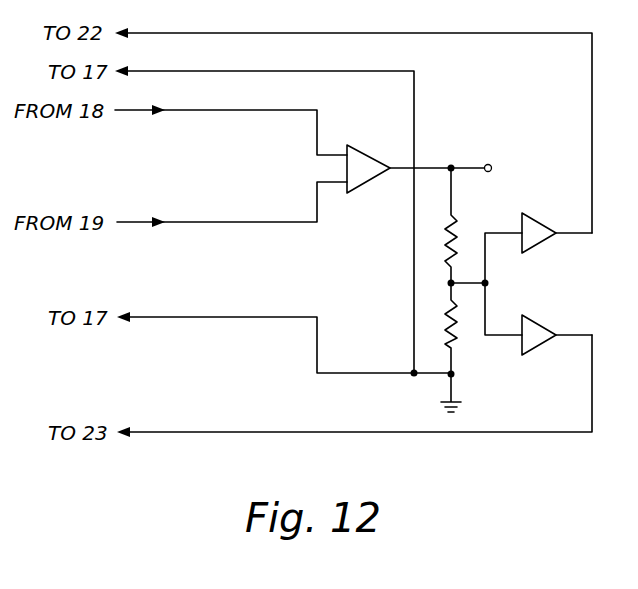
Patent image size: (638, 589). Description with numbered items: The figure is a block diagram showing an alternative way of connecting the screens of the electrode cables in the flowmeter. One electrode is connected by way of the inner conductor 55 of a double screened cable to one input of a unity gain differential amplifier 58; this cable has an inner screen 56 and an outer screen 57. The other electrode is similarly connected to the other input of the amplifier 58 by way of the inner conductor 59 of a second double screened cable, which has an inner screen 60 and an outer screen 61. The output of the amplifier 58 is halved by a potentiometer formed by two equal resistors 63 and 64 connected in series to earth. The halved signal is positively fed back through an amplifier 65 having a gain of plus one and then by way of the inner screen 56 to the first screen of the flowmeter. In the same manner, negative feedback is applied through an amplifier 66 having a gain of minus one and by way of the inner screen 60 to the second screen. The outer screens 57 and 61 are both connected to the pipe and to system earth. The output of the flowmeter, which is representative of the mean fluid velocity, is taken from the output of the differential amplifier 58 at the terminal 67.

The inner conductor 55 is at (248, 110).
The inner screen 56 is at (237, 33).
The outer screen 57 is at (312, 71).
The unity gain differential amplifier 58 is at (374, 155).
The inner conductor 59 is at (246, 222).
The inner screen 60 is at (257, 432).
The outer screen 61 is at (248, 317).
The resistor 63 is at (456, 225).
The resistor 64 is at (454, 334).
The amplifier 65 is at (539, 217).
The amplifier 66 is at (540, 323).
The terminal 67 is at (506, 143).